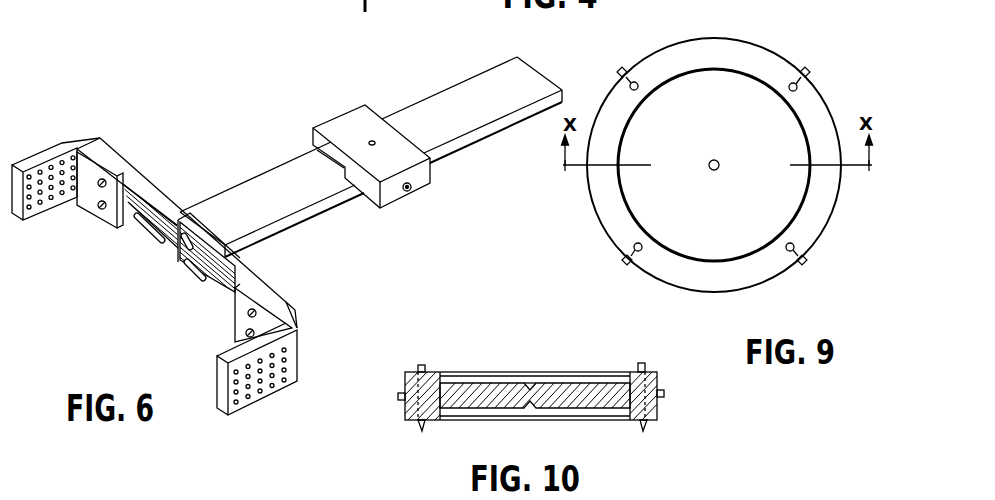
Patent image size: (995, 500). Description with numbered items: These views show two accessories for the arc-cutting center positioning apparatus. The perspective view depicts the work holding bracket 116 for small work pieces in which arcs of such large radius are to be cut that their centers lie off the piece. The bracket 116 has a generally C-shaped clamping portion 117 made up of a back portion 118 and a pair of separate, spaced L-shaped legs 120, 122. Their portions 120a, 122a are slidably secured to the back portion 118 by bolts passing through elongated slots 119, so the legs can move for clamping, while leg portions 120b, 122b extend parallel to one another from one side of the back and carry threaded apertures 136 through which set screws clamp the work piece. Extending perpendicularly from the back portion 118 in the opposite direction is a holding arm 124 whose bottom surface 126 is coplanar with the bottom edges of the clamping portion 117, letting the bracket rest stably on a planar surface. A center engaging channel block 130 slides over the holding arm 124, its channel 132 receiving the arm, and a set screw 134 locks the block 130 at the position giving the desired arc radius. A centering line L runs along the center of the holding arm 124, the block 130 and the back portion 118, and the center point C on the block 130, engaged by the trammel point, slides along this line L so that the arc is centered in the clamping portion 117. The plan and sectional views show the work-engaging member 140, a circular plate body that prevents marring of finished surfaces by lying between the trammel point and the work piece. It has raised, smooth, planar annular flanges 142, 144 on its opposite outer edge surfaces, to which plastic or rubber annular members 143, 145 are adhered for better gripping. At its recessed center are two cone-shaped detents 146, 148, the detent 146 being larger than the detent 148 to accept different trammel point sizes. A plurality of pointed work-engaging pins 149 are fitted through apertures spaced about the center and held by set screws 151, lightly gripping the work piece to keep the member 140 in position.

In FIG. 6, the work holding bracket 116 is at (240, 130).
In FIG. 6, the clamping portion 117 is at (149, 178).
In FIG. 6, the back portion 118 is at (150, 247).
In FIG. 6, the elongated slots 119 is at (188, 263).
In FIG. 6, the leg portion 120 is at (331, 327).
In FIG. 6, the leg portion 120a is at (240, 332).
In FIG. 6, the leg portion 120b is at (225, 403).
In FIG. 6, the leg portion 122 is at (87, 137).
In FIG. 6, the leg portion 122a is at (112, 223).
In FIG. 6, the leg portion 122b is at (47, 215).
In FIG. 6, the holding arm 124 is at (305, 200).
In FIG. 6, the bottom surface 126 is at (288, 237).
In FIG. 6, the channel block 130 is at (371, 118).
In FIG. 6, the channel 132 is at (343, 163).
In FIG. 6, the set screw 134 is at (409, 191).
In FIG. 6, the threaded apertures 136 is at (50, 177).
In FIG. 9, the work-engaging member 140 is at (714, 146).
In FIG. 10, the work-engaging member 140 is at (522, 352).
In FIG. 9, the annular flange 142 is at (683, 277).
In FIG. 10, the annular flange 142 is at (646, 376).
In FIG. 10, the annular member 143 is at (416, 370).
In FIG. 10, the annular flange 144 is at (648, 424).
In FIG. 10, the annular member 145 is at (413, 420).
In FIG. 9, the cone-shaped detent 146 is at (715, 160).
In FIG. 10, the cone-shaped detent 146 is at (531, 386).
In FIG. 10, the cone-shaped detent 148 is at (528, 408).
In FIG. 9, the work-engaging pins 149 is at (636, 82).
In FIG. 10, the work-engaging pins 149 is at (424, 367).
In FIG. 9, the set screws 151 is at (619, 70).
In FIG. 10, the set screws 151 is at (398, 397).
In FIG. 6, the centering line L is at (178, 263).
In FIG. 6, the center point C is at (372, 146).